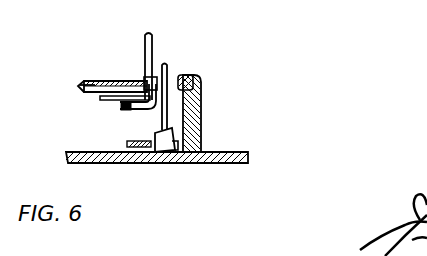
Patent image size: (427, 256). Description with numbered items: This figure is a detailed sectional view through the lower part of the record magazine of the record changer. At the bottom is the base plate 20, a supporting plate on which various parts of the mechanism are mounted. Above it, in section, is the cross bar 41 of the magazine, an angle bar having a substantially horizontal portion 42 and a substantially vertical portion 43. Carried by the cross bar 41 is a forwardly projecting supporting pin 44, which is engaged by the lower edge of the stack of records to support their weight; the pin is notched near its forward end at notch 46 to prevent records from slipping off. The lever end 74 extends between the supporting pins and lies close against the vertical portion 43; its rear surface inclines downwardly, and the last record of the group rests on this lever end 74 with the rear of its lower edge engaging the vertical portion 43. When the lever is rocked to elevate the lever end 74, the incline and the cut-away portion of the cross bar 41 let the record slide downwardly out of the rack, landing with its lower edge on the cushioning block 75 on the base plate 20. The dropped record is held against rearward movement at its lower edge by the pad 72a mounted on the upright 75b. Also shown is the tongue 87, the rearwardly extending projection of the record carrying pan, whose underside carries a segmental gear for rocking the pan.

The base plate 20 is at (233, 152).
The cross bar 41 is at (126, 110).
The horizontal portion 42 is at (126, 106).
The vertical portion 43 is at (154, 80).
The supporting pin 44 is at (127, 80).
The notch 46 is at (101, 80).
The lever end 74 is at (100, 98).
The cushioning block 75 is at (172, 147).
The upright 75b is at (201, 100).
The pad 72a is at (179, 78).
The tongue 87 is at (148, 142).